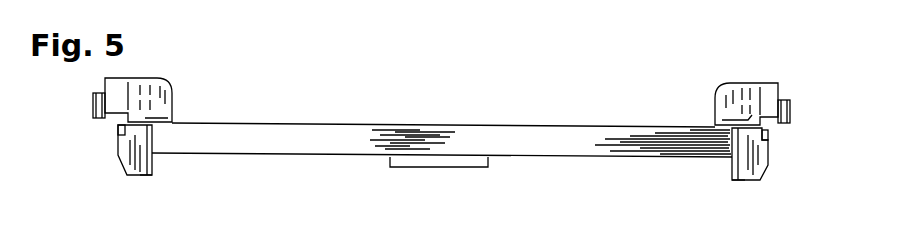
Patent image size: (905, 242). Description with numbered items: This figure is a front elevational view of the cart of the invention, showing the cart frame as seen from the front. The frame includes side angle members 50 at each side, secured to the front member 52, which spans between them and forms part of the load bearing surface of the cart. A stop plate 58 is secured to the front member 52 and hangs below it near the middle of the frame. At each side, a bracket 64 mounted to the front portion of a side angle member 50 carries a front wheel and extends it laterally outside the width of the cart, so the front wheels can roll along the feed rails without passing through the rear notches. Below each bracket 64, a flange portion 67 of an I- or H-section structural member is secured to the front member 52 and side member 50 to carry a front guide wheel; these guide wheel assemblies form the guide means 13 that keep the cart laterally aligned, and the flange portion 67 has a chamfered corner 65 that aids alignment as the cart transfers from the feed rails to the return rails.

The guide means 13 is at (117, 169).
The side angle member 50 is at (763, 83).
The front member 52 is at (547, 147).
The stop plate 58 is at (415, 158).
The bracket 64 is at (172, 84).
The chamfered corner 65 is at (767, 177).
The flange portion 67 is at (140, 176).